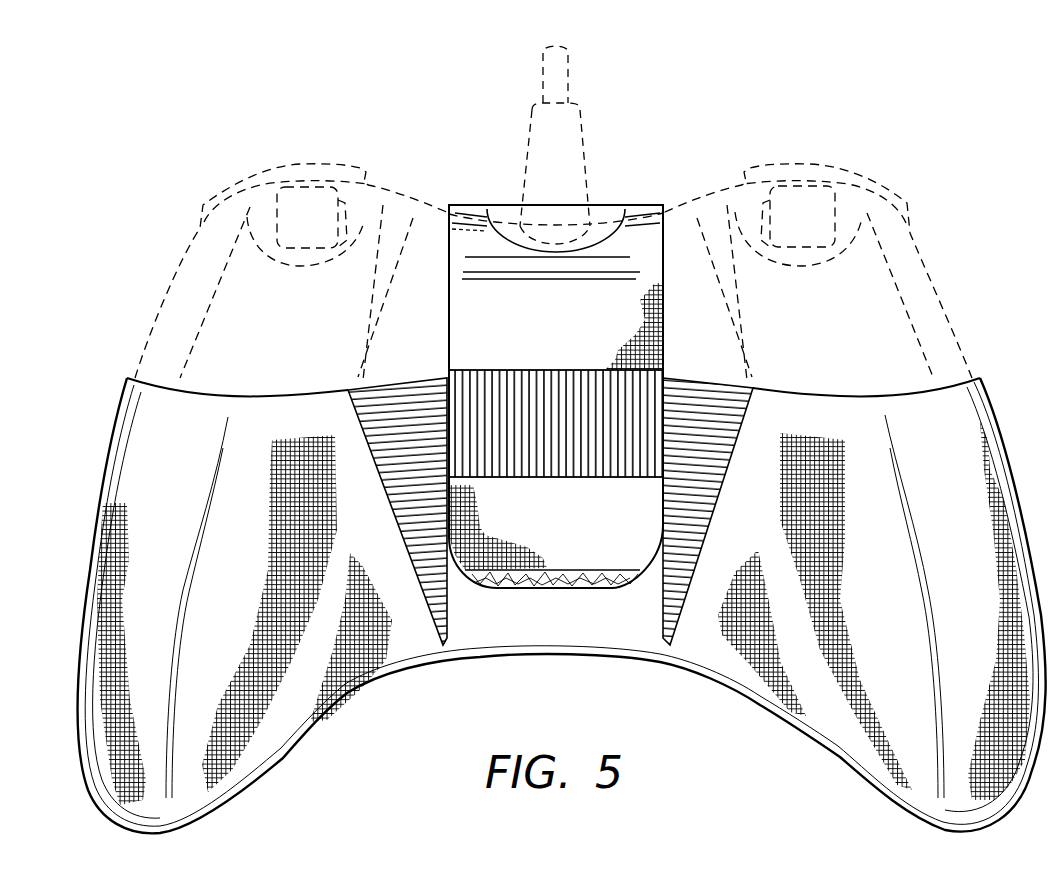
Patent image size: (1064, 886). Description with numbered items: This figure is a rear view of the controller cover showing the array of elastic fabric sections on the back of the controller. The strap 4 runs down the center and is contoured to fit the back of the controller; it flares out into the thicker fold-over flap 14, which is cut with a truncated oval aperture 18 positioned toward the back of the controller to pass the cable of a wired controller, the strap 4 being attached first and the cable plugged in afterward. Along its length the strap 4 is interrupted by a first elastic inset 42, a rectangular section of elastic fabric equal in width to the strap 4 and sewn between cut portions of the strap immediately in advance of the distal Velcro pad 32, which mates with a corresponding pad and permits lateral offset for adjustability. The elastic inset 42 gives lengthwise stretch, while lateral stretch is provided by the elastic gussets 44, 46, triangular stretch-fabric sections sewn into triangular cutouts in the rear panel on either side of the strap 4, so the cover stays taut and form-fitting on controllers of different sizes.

The strap 4 is at (666, 199).
The truncated oval aperture 18 is at (508, 228).
The fold-over flap 14 is at (635, 548).
The first elastic inset 42 is at (497, 390).
The Velcro pad 32 is at (594, 576).
The elastic gusset 44 is at (398, 404).
The elastic gusset 46 is at (730, 392).